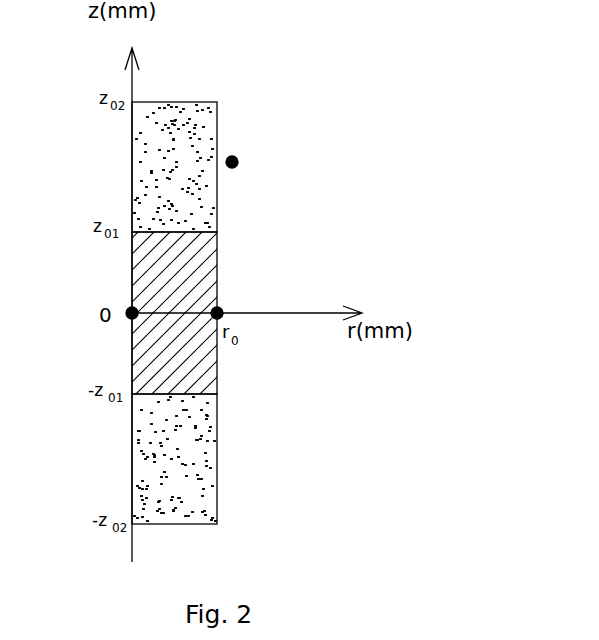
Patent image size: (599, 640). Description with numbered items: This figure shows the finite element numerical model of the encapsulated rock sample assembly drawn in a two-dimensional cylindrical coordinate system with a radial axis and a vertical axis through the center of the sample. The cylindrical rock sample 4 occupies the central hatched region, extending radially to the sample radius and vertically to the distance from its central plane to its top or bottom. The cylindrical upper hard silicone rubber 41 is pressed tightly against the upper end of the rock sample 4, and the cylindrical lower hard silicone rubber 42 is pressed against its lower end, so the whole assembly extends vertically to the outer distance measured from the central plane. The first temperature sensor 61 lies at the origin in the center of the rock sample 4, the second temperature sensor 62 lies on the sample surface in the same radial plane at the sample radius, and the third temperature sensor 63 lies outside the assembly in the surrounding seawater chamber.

The rock sample 4 is at (200, 363).
The upper hard silicone rubber 41 is at (147, 184).
The lower hard silicone rubber 42 is at (195, 464).
The first temperature sensor 61 is at (125, 307).
The second temperature sensor 62 is at (224, 307).
The third temperature sensor 63 is at (242, 153).